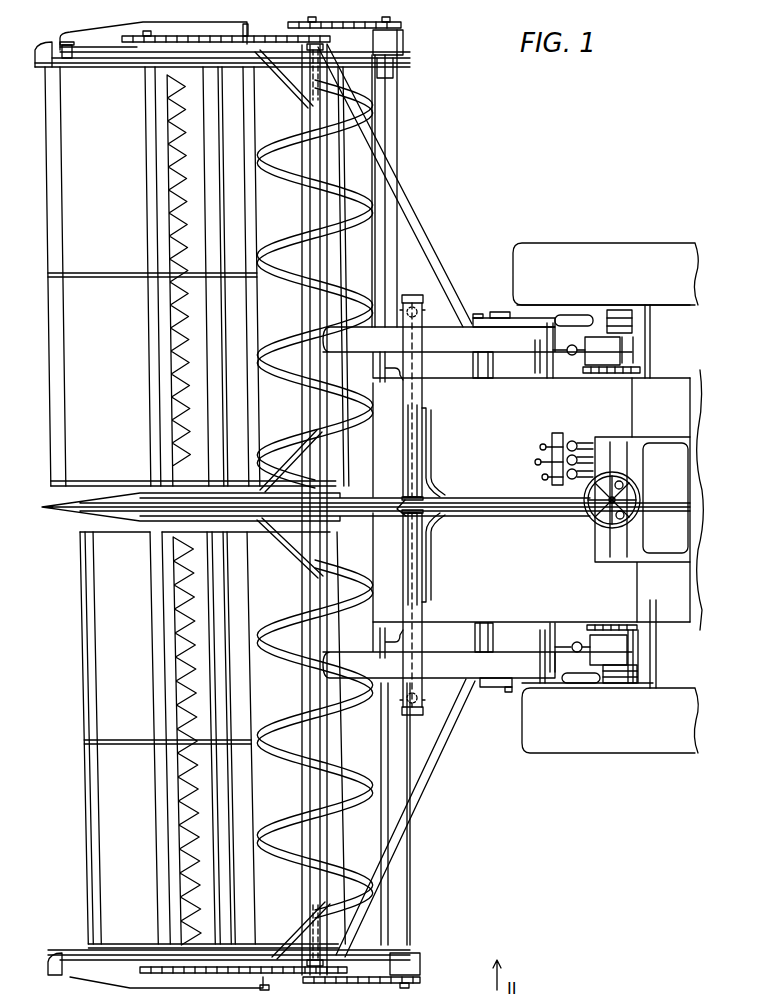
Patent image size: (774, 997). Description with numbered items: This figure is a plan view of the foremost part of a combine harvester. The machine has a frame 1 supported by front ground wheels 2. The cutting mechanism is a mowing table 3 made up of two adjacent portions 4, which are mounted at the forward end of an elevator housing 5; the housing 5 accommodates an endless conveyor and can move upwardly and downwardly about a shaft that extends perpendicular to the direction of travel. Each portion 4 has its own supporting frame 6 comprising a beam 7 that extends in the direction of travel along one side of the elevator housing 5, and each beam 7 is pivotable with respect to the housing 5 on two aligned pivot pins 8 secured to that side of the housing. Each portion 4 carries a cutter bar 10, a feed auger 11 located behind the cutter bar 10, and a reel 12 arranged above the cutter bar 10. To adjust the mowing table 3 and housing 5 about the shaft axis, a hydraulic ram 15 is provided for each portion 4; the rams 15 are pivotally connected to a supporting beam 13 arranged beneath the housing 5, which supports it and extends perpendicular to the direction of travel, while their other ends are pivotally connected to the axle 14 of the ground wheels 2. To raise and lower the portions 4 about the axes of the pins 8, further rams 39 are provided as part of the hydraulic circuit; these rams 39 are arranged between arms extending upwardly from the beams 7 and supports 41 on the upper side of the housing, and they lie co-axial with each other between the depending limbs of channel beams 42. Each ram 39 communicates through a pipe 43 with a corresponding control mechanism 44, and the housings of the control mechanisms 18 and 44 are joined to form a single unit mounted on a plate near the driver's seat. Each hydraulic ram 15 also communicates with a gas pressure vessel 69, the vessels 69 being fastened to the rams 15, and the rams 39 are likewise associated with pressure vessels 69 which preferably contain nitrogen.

The frame 1 is at (697, 378).
The front ground wheels 2 is at (566, 243).
The mowing table 3 is at (75, 510).
The portions 4 is at (385, 130).
The elevator housing 5 is at (624, 413).
The supporting frame 6 is at (420, 222).
The beam 7 is at (478, 316).
The pivot pins 8 is at (402, 380).
The cutter bar 10 is at (170, 367).
The feed auger 11 is at (290, 272).
The reel 12 is at (53, 432).
The supporting beam 13 is at (493, 366).
The axle 14 is at (652, 340).
The hydraulic ram 15 is at (552, 314).
The control mechanism 18 is at (548, 441).
The rams 39 is at (411, 451).
The supports 41 is at (407, 508).
The channel beams 42 is at (426, 398).
The pipe 43 is at (437, 470).
The control mechanism 44 is at (548, 479).
The gas pressure vessel 69 is at (580, 317).